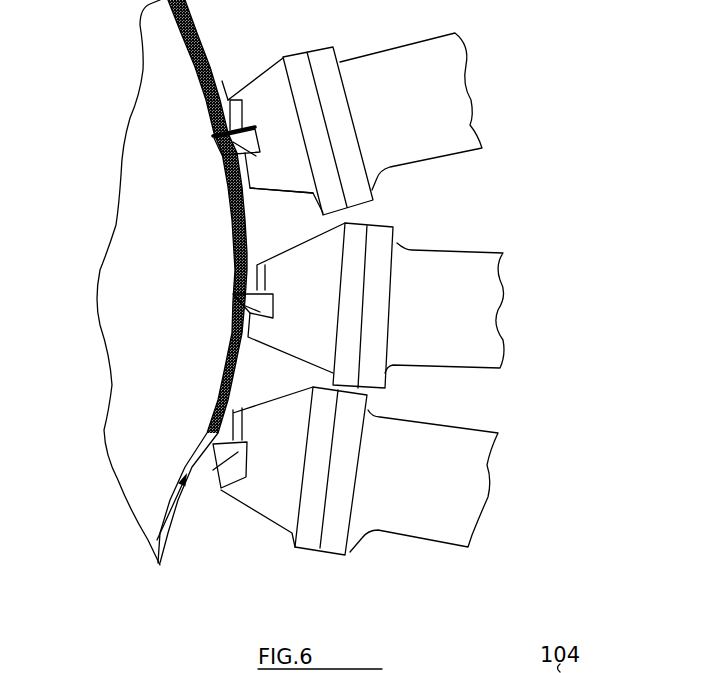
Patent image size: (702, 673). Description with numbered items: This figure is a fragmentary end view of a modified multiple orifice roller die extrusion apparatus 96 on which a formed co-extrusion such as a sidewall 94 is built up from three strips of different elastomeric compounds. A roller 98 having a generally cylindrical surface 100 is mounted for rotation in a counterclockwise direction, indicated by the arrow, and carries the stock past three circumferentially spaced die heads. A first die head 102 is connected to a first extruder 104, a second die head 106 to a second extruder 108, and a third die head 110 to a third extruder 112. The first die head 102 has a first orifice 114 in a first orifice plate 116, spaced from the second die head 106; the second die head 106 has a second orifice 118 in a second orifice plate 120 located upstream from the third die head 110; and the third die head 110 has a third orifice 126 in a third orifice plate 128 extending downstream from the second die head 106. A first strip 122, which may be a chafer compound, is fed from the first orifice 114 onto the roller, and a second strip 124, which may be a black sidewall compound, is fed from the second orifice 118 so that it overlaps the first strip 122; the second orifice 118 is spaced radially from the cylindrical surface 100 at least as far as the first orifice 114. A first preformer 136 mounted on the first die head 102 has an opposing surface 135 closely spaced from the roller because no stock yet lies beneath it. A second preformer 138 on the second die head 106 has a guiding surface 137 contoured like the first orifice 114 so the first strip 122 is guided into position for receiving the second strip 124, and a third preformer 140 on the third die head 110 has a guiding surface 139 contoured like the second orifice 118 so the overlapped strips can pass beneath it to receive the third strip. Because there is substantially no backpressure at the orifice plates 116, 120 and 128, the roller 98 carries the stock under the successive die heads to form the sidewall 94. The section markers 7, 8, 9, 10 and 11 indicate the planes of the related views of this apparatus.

The section line 7- 7 is at (42, 0).
The section line 8- 8 is at (213, 443).
The section line 9- 9 is at (233, 290).
The section line 10- 10 is at (222, 147).
The section line 11- 11 is at (153, 40).
The sidewall 94 is at (222, 81).
The multiple orifice roller die extrusion apparatus 96 is at (530, 208).
The roller 98 is at (143, 517).
The cylindrical surface 100 is at (172, 538).
The first die head 102 is at (252, 524).
The first extruder 104 is at (490, 477).
The second die head 106 is at (323, 253).
The second extruder 108 is at (512, 309).
The third die head 110 is at (278, 93).
The third extruder 112 is at (488, 89).
The first orifice 114 is at (217, 428).
The first orifice plate 116 is at (227, 400).
The second orifice 118 is at (233, 285).
The second orifice plate 120 is at (233, 276).
The first strip 122 is at (242, 231).
The second strip 124 is at (242, 188).
The third orifice 126 is at (220, 135).
The third orifice plate 128 is at (222, 122).
The opposing surface 135 is at (170, 448).
The first preformer 136 is at (230, 456).
The guiding surface 137 is at (228, 297).
The second preformer 138 is at (228, 342).
The guiding surface 139 is at (162, 166).
The third preformer 140 is at (226, 160).